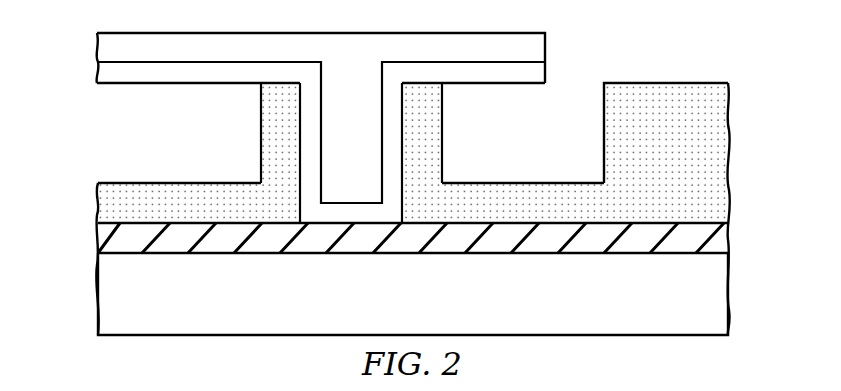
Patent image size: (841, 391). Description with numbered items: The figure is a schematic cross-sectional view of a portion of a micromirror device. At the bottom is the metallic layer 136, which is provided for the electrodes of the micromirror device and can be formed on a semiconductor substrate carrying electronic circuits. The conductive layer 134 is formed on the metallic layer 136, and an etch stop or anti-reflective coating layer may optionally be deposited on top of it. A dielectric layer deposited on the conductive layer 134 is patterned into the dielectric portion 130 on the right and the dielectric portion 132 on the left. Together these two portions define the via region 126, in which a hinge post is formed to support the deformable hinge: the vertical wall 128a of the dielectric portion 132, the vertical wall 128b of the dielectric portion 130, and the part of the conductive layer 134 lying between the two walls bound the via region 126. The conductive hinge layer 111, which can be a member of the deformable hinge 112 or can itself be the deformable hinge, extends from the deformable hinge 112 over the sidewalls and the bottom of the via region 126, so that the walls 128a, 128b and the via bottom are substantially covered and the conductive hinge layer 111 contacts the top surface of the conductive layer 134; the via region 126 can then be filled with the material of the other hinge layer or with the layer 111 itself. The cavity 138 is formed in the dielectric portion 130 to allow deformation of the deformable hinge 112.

The conductive hinge layer 111 is at (97, 72).
The deformable hinge 112 is at (97, 45).
The via region 126 is at (348, 90).
The vertical wall 128a is at (268, 132).
The vertical wall 128b is at (434, 143).
The dielectric portion 130 is at (728, 150).
The dielectric portion 132 is at (98, 200).
The conductive layer 134 is at (728, 238).
The metallic layer 136 is at (394, 306).
The cavity 138 is at (536, 143).